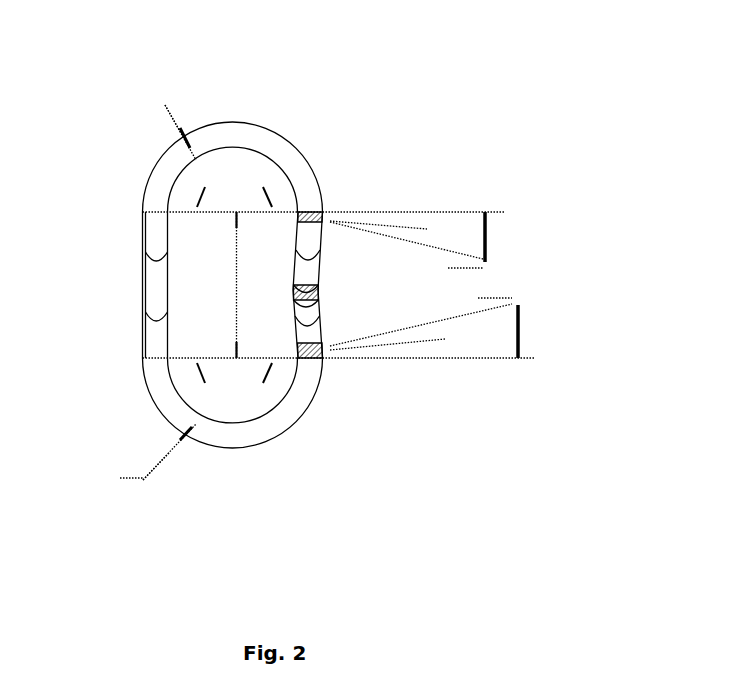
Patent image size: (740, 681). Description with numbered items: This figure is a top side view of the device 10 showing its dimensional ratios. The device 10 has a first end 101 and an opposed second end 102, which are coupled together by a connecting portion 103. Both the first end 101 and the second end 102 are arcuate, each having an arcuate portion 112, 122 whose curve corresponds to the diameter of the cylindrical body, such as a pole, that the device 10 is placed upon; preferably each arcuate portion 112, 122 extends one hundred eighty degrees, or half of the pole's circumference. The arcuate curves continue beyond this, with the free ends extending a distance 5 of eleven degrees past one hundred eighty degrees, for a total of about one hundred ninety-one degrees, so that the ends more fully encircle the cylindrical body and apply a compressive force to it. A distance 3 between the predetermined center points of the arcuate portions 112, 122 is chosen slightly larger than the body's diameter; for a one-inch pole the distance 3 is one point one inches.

The device 10 is at (413, 65).
The first end 101 is at (282, 131).
The second end 102 is at (268, 425).
The connecting portion 103 is at (148, 302).
The arcuate portion of the first end 112 is at (165, 105).
The arcuate portion of the second end 122 is at (143, 480).
The distance between center points 3 is at (238, 297).
The distance beyond 180 degrees 5 is at (487, 237).